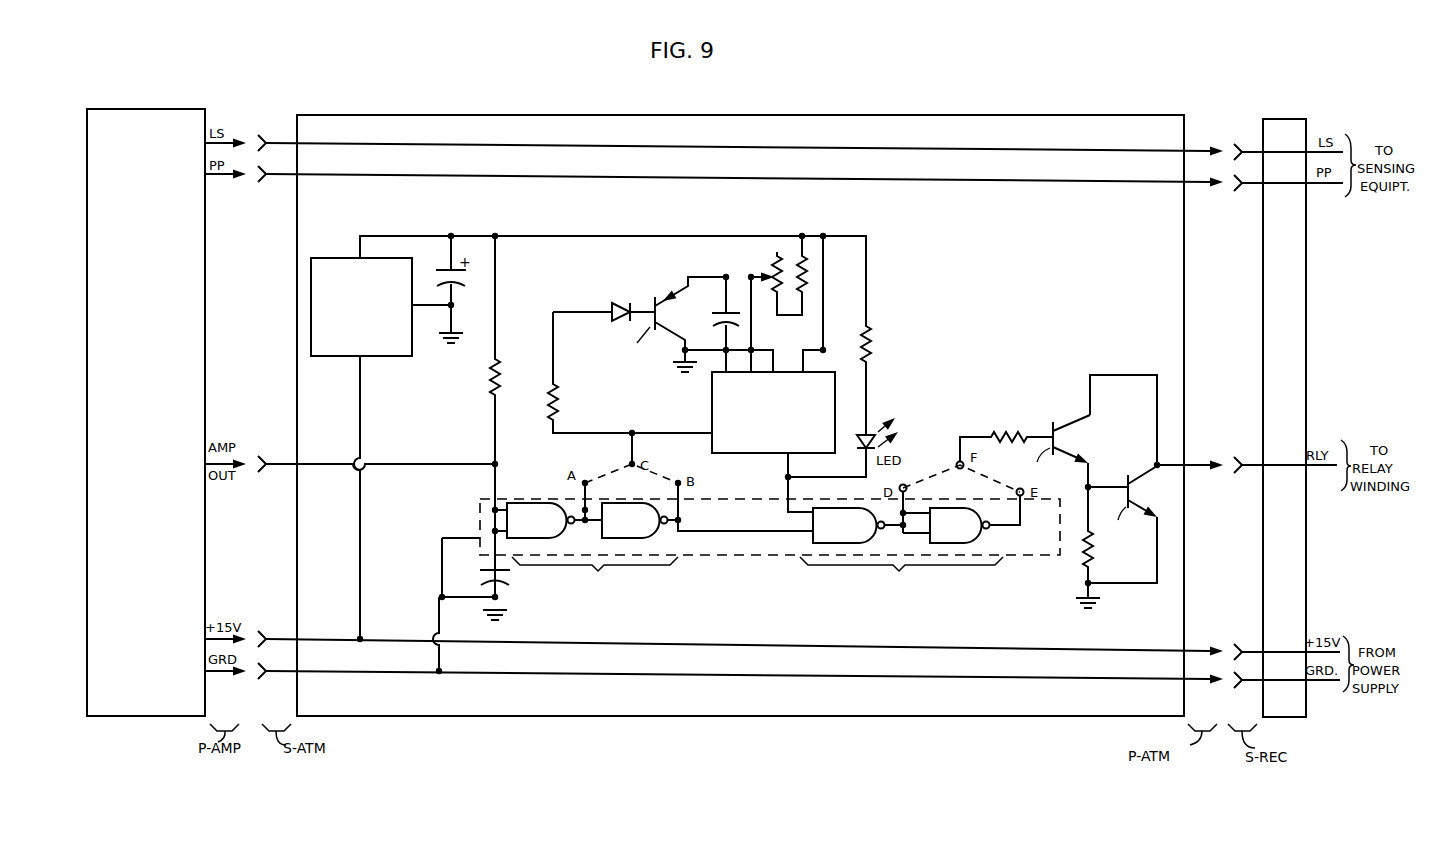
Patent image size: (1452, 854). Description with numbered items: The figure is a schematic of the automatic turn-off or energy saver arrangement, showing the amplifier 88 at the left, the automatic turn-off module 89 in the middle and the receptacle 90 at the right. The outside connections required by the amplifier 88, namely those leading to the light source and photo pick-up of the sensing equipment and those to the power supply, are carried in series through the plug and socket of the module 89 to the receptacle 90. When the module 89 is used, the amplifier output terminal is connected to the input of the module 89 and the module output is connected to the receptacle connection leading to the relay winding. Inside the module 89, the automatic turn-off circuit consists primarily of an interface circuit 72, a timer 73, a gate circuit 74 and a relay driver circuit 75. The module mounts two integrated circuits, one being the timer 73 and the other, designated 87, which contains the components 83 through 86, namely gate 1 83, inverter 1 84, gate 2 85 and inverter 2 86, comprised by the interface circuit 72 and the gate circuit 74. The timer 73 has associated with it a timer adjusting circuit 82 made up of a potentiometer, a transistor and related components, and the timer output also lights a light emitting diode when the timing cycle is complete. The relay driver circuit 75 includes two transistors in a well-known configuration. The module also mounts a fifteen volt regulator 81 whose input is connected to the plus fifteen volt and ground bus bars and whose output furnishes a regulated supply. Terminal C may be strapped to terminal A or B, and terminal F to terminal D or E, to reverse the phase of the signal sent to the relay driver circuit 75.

The interface circuit 72 is at (586, 610).
The timer circuit 73 is at (700, 407).
The gating circuit 74 is at (887, 610).
The relay driver circuit 75 is at (1111, 463).
The 15 volt regulator circuit 81 is at (352, 358).
The timer adjusting circuit 82 is at (645, 303).
The gate 1 83 is at (526, 503).
The inverter 1 84 is at (622, 503).
The gate 2 85 is at (831, 508).
The inverter 2 86 is at (944, 508).
The integrated circuit 87 is at (471, 511).
The amplifier 88 is at (158, 719).
The automatic turn-off module 89 is at (693, 719).
The receptacle 90 is at (1284, 720).